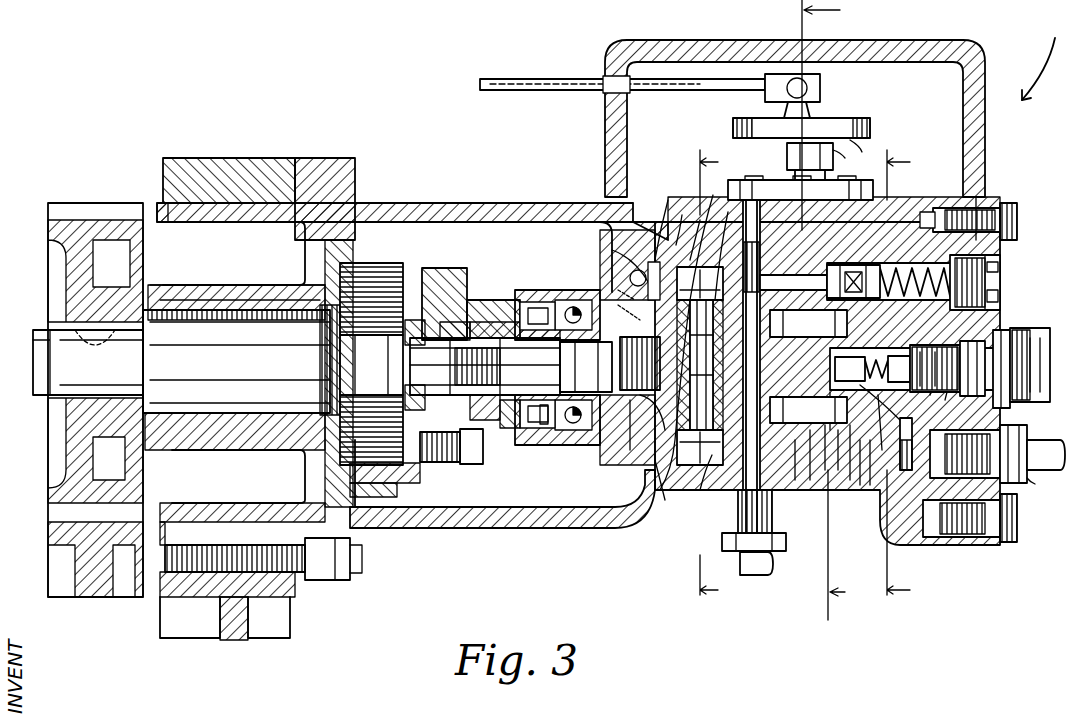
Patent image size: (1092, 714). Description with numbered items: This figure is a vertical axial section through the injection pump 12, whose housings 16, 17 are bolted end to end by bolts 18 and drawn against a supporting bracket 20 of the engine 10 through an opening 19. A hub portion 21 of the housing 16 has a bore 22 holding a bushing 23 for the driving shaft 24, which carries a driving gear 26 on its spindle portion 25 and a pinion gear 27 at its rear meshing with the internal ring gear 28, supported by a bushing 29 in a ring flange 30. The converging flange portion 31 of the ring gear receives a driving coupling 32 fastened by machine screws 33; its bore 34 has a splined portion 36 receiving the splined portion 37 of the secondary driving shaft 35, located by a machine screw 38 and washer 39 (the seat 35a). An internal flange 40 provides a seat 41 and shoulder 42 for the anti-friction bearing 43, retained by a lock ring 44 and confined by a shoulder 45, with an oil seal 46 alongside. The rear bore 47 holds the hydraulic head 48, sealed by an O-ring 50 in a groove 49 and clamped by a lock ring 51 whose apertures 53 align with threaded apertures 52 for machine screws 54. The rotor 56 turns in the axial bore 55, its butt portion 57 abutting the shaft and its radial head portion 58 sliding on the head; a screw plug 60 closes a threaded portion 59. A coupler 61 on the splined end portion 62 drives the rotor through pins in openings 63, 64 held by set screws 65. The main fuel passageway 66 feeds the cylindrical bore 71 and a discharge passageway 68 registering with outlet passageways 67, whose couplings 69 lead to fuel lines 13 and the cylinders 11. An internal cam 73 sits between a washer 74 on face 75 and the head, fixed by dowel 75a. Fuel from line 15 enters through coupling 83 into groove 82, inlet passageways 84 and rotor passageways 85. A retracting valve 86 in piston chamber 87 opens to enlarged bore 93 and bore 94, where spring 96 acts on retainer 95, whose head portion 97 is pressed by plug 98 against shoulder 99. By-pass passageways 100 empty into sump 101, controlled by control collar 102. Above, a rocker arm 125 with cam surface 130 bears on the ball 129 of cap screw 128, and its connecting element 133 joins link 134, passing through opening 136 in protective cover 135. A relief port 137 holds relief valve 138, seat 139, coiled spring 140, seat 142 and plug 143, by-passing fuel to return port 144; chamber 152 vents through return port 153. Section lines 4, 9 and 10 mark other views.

The section line 4 is at (836, 615).
The section line 9 is at (712, 375).
The engine 10 is at (907, 377).
The cylinders 11 is at (750, 195).
The injection pump 12 is at (1042, 58).
The fuel lines 13 is at (1050, 446).
The fuel line 15 is at (740, 568).
The housing 16 is at (300, 160).
The housing 17 is at (345, 160).
The bolts 18 is at (358, 582).
The opening 19 is at (168, 203).
The supporting bracket 20 is at (248, 632).
The hub portion 21 is at (212, 290).
The bore 22 is at (250, 290).
The bushing 23 is at (242, 312).
The driving shaft 24 is at (236, 361).
The spindle portion 25 is at (88, 362).
The driving gear 26 is at (55, 222).
The pinion gear 27 is at (322, 340).
The internal ring gear 28 is at (408, 305).
The bushing 29 is at (400, 224).
The ring flange 30 is at (425, 224).
The converging circumferential flange portion 31 is at (440, 280).
The driving coupling 32 is at (472, 302).
The machine screws 33 is at (470, 464).
The bore 34 is at (500, 322).
The secondary driving shaft 35 is at (485, 366).
The spacer 35a is at (484, 418).
The splined portion 36 is at (460, 322).
The splined portion 37 is at (485, 374).
The machine screw 38 is at (425, 388).
The washer 39 is at (432, 336).
The internal flange 40 is at (590, 290).
The seat 41 is at (538, 428).
The shoulder 42 is at (515, 428).
The anti-friction bearing 43 is at (548, 426).
The lock ring 44 is at (590, 445).
The shoulder 45 is at (598, 350).
The oil seal 46 is at (540, 300).
The bore 47 is at (838, 470).
The hydraulic head 48 is at (825, 470).
The circumferential groove 49 is at (962, 537).
The O-ring 50 is at (945, 537).
The lock ring 51 is at (990, 208).
The threaded apertures 52 is at (928, 212).
The apertures 53 is at (980, 200).
The machine screws 54 is at (1010, 203).
The axial bore 55 is at (724, 250).
The rotor 56 is at (772, 450).
The butt portion 57 is at (635, 337).
The radial head portion 58 is at (648, 448).
The threaded portion 59 is at (960, 348).
The screw plug 60 is at (1005, 338).
The coupler 61 is at (620, 425).
The splined end portion 62 is at (637, 412).
The openings 63 is at (659, 281).
The openings 64 is at (621, 288).
The set screws 65 is at (625, 305).
The main fuel passageway 66 is at (772, 360).
The outlet passageways 67 is at (882, 450).
The discharge passageway 68 is at (830, 400).
The couplings 69 is at (1042, 475).
The cylindrical bore 71 is at (700, 366).
The internal cam 73 is at (692, 232).
The washer 74 is at (672, 221).
The face 75 is at (655, 220).
The dowel 75a is at (645, 528).
The circumferential groove 82 is at (758, 200).
The coupling 83 is at (724, 545).
The inlet passageways 84 is at (705, 490).
The inlet passageways 85 is at (665, 500).
The retracting valve 86 is at (870, 485).
The piston chamber 87 is at (860, 485).
The enlarged bore 93 is at (900, 420).
The bore 94 is at (940, 350).
The retainer 95 is at (970, 350).
The spring 96 is at (906, 470).
The head portion 97 is at (1030, 345).
The plug 98 is at (1040, 360).
The shoulder 99 is at (935, 380).
The by-pass passageways 100 is at (810, 480).
The sump 101 is at (795, 480).
The control collar 102 is at (850, 480).
The rocker arm 125 is at (858, 120).
The cap screw 128 is at (830, 163).
The bearing ball 129 is at (787, 158).
The cam surface 130 is at (869, 147).
The connecting element 133 is at (810, 110).
The link 134 is at (560, 73).
The protective cover 135 is at (688, 40).
The opening 136 is at (605, 92).
The relief port 137 is at (880, 281).
The relief valve 138 is at (844, 281).
The seat 139 is at (868, 282).
The coiled spring 140 is at (995, 262).
The seat 142 is at (998, 266).
The plug 143 is at (998, 294).
The return port 144 is at (848, 282).
The chamber 152 is at (645, 265).
The return port 153 is at (619, 261).